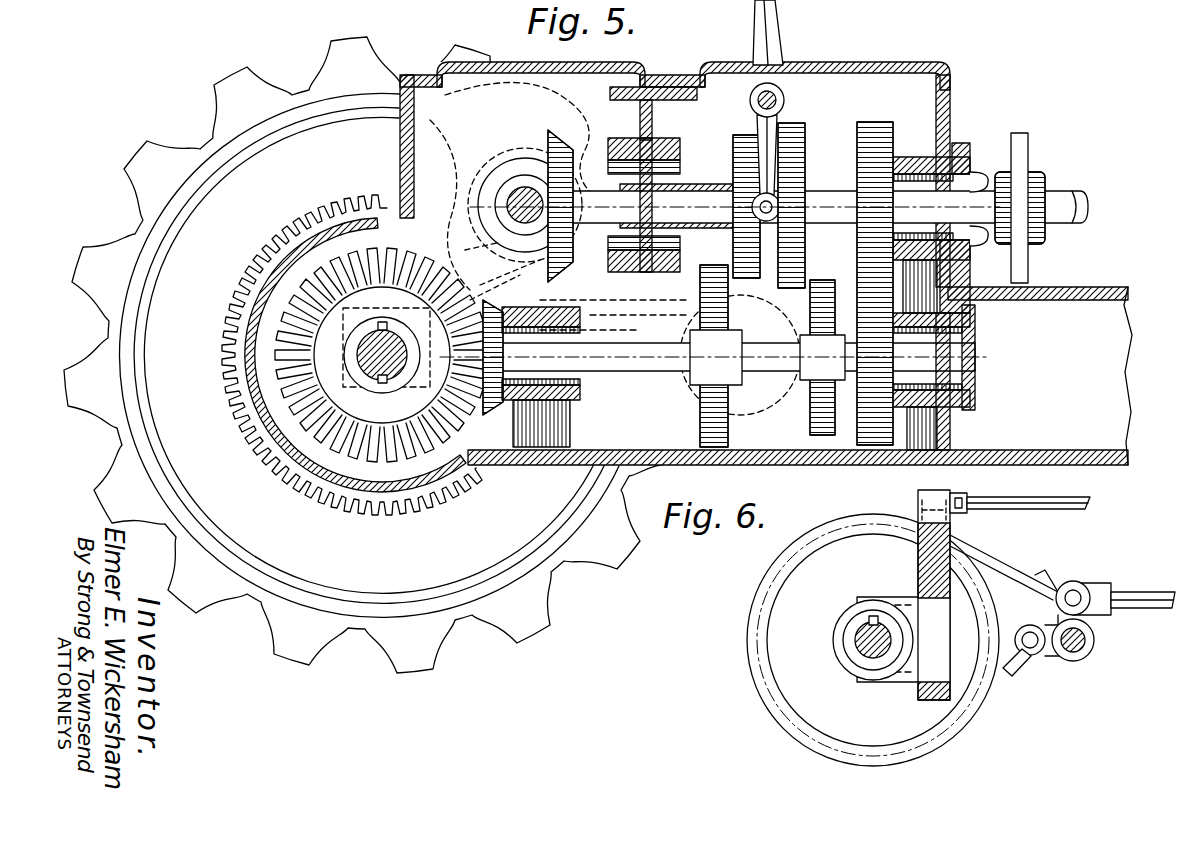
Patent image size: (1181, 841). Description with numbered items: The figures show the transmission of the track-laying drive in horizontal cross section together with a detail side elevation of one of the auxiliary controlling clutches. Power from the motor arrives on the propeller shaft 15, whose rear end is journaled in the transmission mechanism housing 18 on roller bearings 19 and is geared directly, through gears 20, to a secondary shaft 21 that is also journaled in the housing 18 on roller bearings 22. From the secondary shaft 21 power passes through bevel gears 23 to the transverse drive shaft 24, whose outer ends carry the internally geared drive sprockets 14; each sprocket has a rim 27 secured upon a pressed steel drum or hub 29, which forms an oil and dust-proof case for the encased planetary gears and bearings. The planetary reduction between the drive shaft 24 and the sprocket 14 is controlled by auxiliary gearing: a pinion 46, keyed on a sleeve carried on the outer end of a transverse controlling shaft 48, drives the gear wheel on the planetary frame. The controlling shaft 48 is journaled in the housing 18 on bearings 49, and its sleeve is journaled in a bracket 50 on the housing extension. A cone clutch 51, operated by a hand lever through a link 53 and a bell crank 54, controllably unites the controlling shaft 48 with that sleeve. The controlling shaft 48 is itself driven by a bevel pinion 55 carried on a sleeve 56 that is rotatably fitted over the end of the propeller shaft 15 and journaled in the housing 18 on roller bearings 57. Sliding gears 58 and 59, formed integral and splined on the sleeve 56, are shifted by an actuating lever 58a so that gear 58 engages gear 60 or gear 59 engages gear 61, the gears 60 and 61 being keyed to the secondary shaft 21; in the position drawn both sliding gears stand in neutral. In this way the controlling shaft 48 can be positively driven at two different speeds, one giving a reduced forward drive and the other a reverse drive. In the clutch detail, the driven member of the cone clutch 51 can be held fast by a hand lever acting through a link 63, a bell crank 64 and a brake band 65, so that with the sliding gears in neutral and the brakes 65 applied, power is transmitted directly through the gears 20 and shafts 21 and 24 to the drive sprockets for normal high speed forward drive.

In FIG. 5, the drive sprocket 14 is at (382, 355).
In FIG. 5, the propeller shaft 15 is at (1093, 210).
In FIG. 5, the transmission mechanism housing 18 is at (693, 68).
In FIG. 5, the roller bearings 19 is at (942, 173).
In FIG. 5, the gears 20 is at (877, 470).
In FIG. 5, the secondary shaft 21 is at (647, 365).
In FIG. 5, the roller bearings 22 is at (972, 347).
In FIG. 5, the bevel gears 23 is at (452, 415).
In FIG. 5, the transverse drive shaft 24 is at (363, 353).
In FIG. 5, the sprocket rim 27 is at (291, 98).
In FIG. 5, the pressed steel drum or hub 29 is at (371, 355).
In FIG. 5, the pinion 46 is at (662, 283).
In FIG. 5, the controlling shaft 48 is at (522, 205).
In FIG. 6, the controlling shaft 48 is at (860, 638).
In FIG. 5, the bearings 49 is at (497, 178).
In FIG. 5, the bracket 50 is at (610, 249).
In FIG. 6, the cone clutch 51 is at (891, 620).
In FIG. 6, the link 53 is at (1020, 493).
In FIG. 6, the bell crank 54 is at (918, 594).
In FIG. 5, the bevel pinion 55 is at (567, 167).
In FIG. 5, the sleeve 56 is at (702, 187).
In FIG. 5, the roller bearings 57 is at (657, 167).
In FIG. 5, the sliding gear 58 is at (740, 143).
In FIG. 5, the actuating lever 58a is at (793, 32).
In FIG. 5, the sliding gear 59 is at (810, 193).
In FIG. 5, the gear 60 is at (727, 427).
In FIG. 5, the gear 61 is at (812, 428).
In FIG. 6, the link 63 is at (1115, 590).
In FIG. 6, the bell crank 64 is at (1050, 658).
In FIG. 6, the brake band 65 is at (1040, 582).